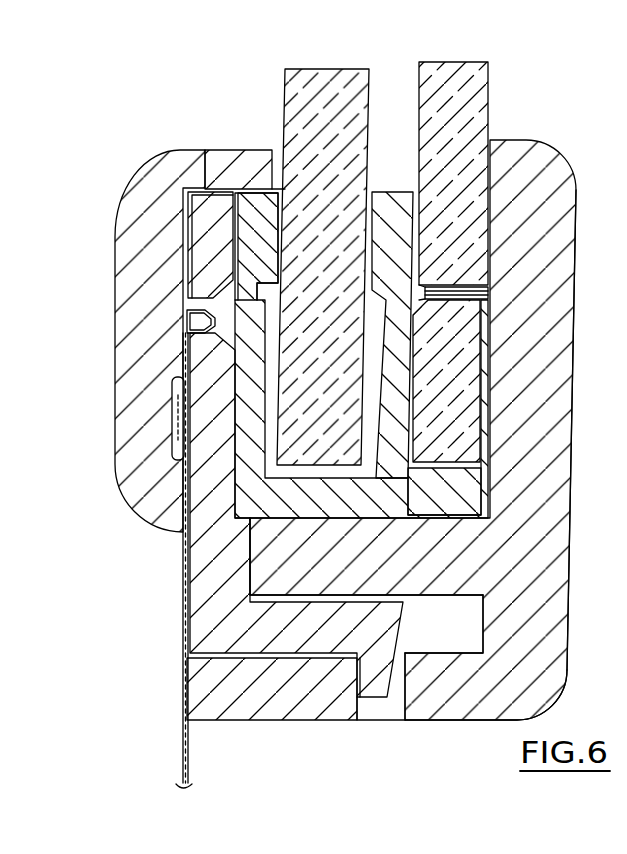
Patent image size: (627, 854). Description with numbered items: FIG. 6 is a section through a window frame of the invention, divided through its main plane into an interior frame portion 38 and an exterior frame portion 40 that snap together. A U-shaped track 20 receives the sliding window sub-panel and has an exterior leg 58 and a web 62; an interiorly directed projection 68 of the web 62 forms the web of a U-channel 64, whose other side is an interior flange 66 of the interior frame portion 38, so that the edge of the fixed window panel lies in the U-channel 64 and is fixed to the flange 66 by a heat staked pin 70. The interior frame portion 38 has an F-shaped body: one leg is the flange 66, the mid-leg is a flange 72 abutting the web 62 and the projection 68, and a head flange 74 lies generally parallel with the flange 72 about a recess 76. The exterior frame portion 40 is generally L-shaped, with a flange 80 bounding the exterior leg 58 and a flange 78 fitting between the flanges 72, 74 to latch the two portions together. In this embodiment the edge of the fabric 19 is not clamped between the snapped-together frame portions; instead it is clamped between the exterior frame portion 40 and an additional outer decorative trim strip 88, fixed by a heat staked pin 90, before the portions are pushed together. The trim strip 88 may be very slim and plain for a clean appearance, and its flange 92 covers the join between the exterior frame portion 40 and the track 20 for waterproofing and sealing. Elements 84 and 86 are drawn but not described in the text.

The fabric 19 is at (186, 757).
The U-shaped track 20 is at (247, 262).
The interior frame portion 38 is at (530, 202).
The exterior frame portion 40 is at (203, 207).
The exterior leg 58 is at (257, 197).
The web 62 is at (243, 540).
The U-channel 64 is at (493, 343).
The interior flange 66 is at (530, 412).
The interiorly directed projection 68 is at (388, 192).
The heat staked pin 70 is at (440, 292).
The flange 72 is at (453, 568).
The head flange 74 is at (276, 722).
The recess 76 is at (480, 624).
The flange 78 is at (260, 637).
The flange 80 is at (186, 463).
The housing base 84 is at (392, 722).
The recess 86 is at (370, 718).
The outer decorative trim strip 88 is at (140, 297).
The heat staked pin 90 is at (187, 318).
The flange 92 is at (233, 172).